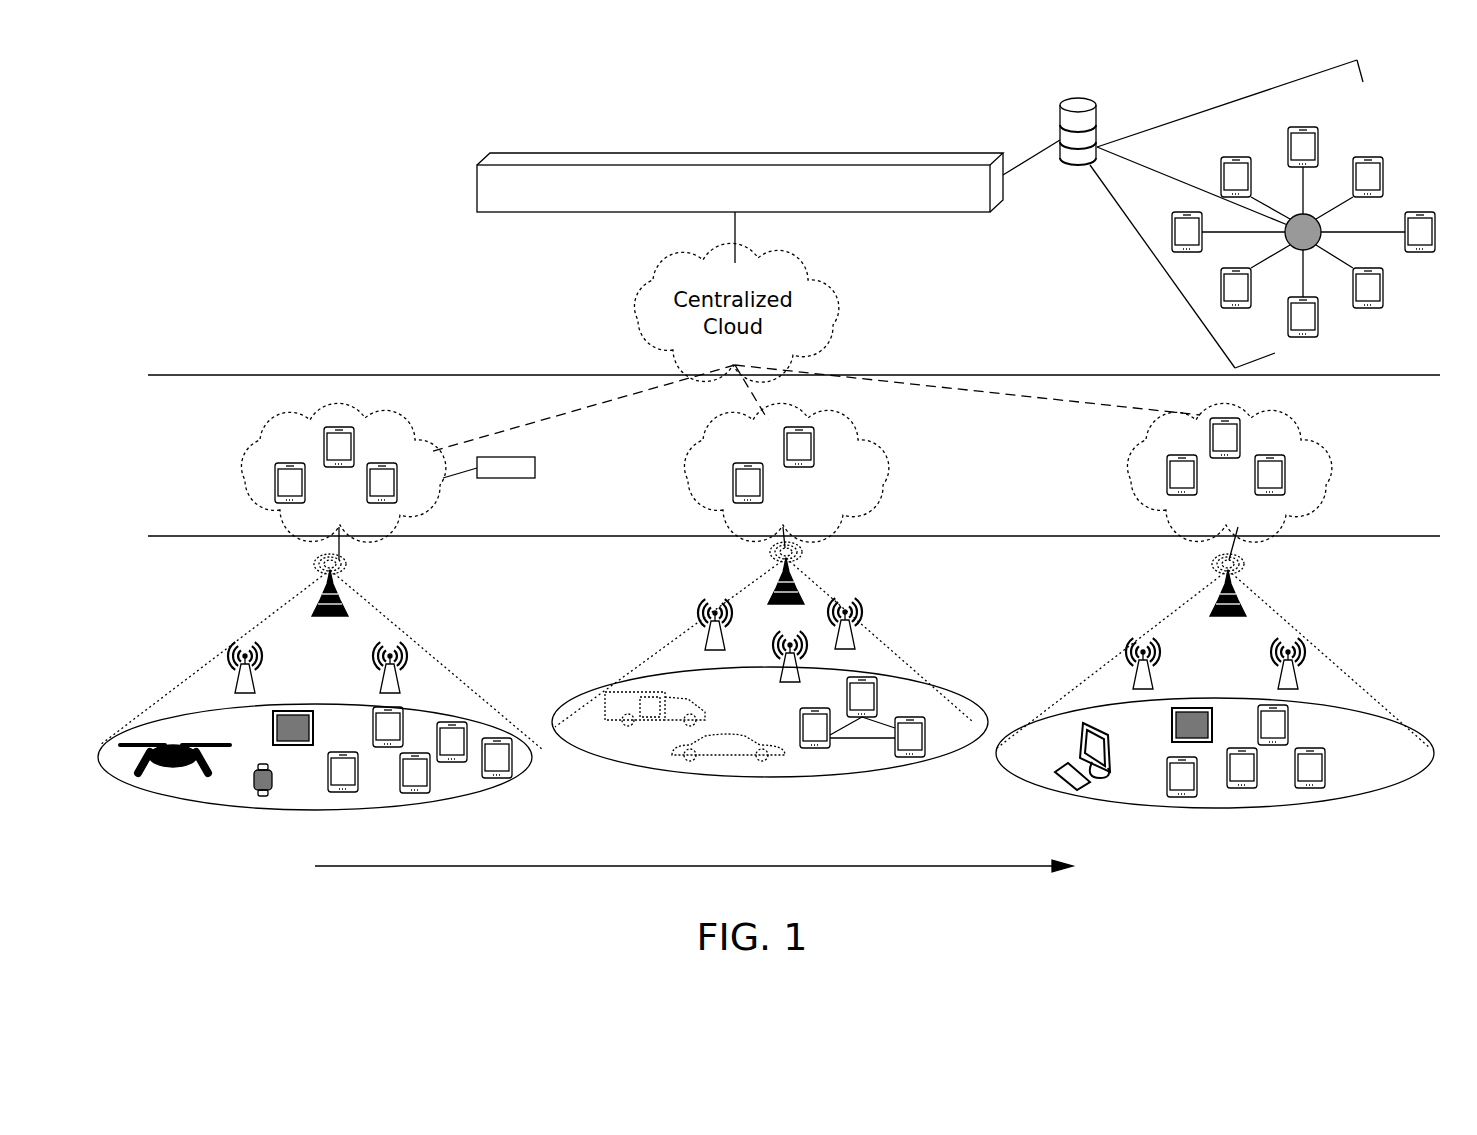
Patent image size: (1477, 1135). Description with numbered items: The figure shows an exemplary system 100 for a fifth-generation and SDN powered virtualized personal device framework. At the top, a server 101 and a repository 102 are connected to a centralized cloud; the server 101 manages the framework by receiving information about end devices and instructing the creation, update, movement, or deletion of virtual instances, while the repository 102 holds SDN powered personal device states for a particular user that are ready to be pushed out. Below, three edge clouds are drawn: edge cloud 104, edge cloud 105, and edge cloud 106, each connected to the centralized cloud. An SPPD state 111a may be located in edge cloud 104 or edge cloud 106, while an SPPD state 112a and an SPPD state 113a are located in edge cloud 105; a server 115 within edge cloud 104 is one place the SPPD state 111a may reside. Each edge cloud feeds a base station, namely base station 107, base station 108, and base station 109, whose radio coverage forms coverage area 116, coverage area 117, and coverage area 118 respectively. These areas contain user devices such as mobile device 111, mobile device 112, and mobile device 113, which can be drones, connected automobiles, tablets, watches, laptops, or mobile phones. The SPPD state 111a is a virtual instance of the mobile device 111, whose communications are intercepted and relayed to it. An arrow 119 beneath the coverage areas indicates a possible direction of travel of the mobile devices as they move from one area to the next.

The system 100 is at (240, 146).
The server 101 is at (693, 153).
The repository 102 is at (1068, 106).
The edge cloud 104 is at (255, 450).
The edge cloud 105 is at (690, 487).
The edge cloud 106 is at (1318, 425).
The base station 107 is at (325, 562).
The base station 108 is at (776, 552).
The base station 109 is at (1225, 562).
The mobile device 111 is at (415, 793).
The SPPD state 111a is at (1310, 128).
The mobile device 112 is at (908, 717).
The SPPD state 112a is at (1372, 158).
The mobile device 113 is at (862, 677).
The SPPD state 113a is at (1437, 238).
The server 115 is at (489, 468).
The coverage area 116 is at (225, 805).
The coverage area 117 is at (695, 775).
The coverage area 118 is at (1125, 800).
The arrow 119 is at (368, 866).